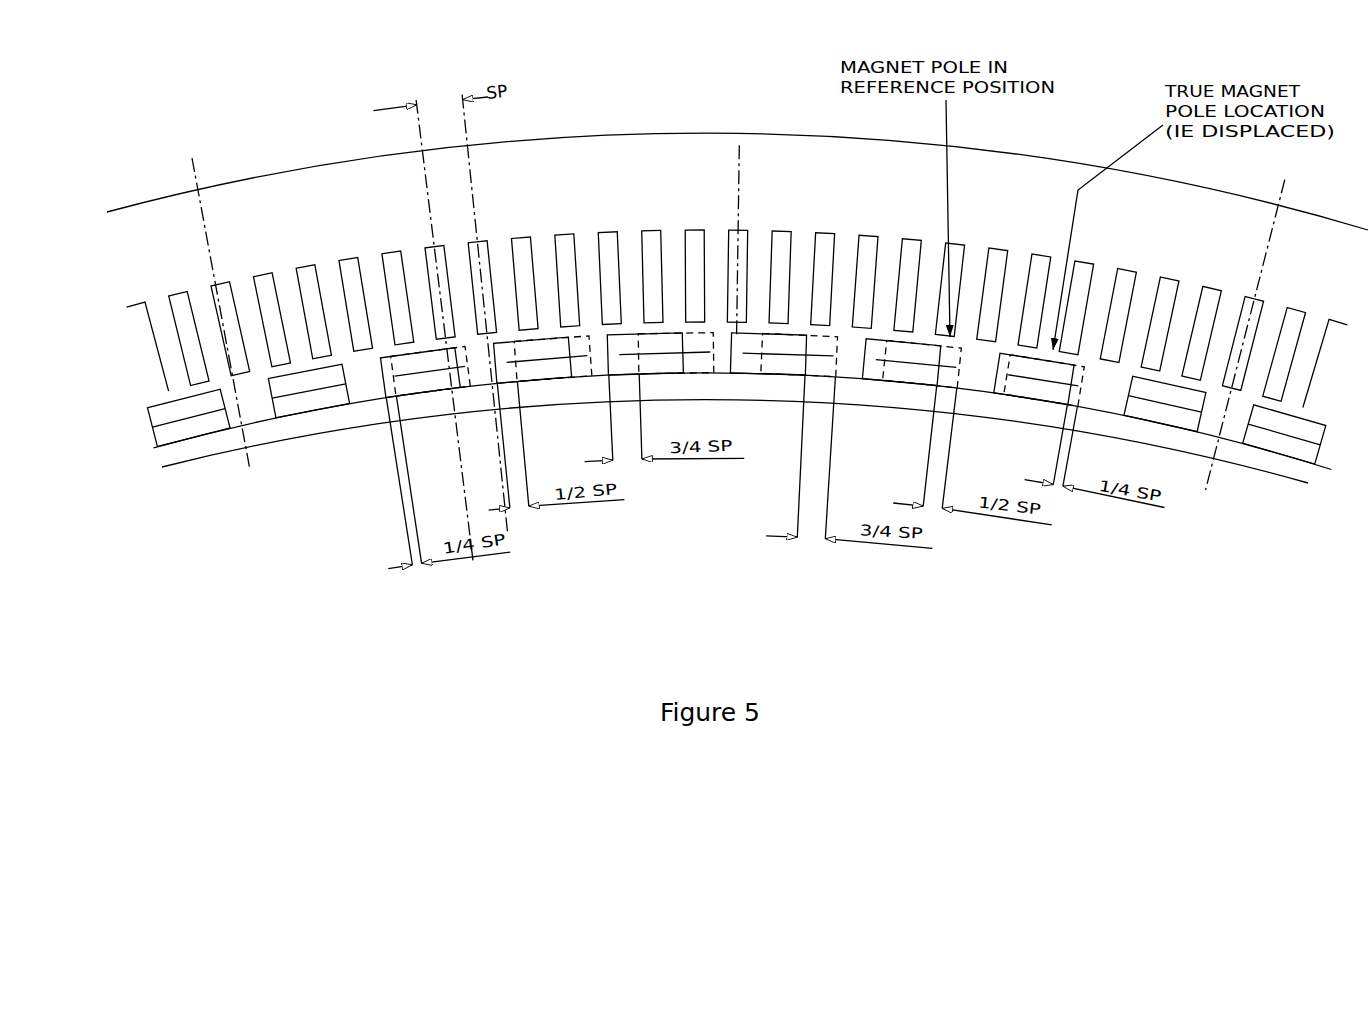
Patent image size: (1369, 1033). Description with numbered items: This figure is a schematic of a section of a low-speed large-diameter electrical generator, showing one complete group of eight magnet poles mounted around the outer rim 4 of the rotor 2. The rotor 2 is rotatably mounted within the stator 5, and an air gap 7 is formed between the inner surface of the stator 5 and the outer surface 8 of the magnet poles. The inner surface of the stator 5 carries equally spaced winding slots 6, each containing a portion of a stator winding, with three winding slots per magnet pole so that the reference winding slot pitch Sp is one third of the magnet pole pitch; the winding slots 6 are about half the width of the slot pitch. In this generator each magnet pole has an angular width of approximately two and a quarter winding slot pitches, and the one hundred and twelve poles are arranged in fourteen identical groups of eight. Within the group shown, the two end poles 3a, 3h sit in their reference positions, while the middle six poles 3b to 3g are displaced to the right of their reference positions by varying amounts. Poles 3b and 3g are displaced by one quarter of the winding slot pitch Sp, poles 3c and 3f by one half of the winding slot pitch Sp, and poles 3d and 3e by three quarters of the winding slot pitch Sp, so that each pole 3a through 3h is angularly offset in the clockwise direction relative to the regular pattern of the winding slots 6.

The rotor 2 is at (848, 386).
The first magnet pole 3a is at (287, 389).
The second magnet pole 3b is at (428, 366).
The third magnet pole 3c is at (545, 353).
The fourth magnet pole 3d is at (661, 348).
The fifth magnet pole 3e is at (782, 348).
The sixth magnet pole 3f is at (920, 358).
The seventh magnet pole 3g is at (1021, 371).
The eighth magnet pole 3h is at (170, 417).
The outer rim 4 is at (362, 400).
The stator 5 is at (673, 160).
The winding slots 6 is at (348, 273).
The air gap 7 is at (1305, 411).
The outer surface 8 is at (1270, 408).